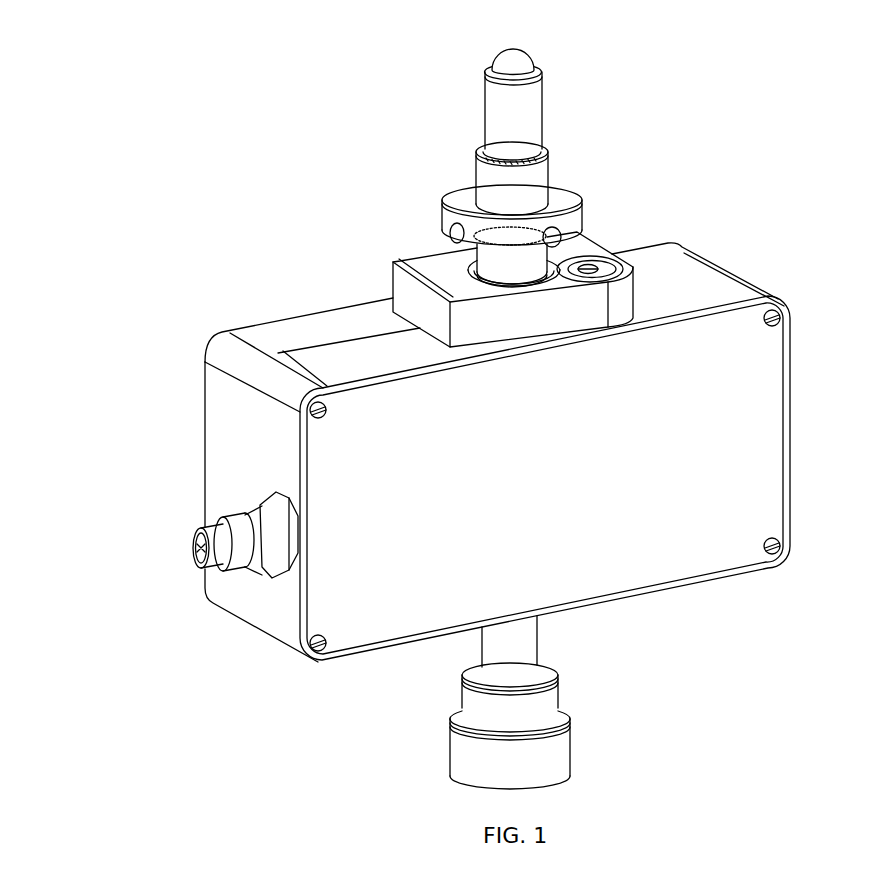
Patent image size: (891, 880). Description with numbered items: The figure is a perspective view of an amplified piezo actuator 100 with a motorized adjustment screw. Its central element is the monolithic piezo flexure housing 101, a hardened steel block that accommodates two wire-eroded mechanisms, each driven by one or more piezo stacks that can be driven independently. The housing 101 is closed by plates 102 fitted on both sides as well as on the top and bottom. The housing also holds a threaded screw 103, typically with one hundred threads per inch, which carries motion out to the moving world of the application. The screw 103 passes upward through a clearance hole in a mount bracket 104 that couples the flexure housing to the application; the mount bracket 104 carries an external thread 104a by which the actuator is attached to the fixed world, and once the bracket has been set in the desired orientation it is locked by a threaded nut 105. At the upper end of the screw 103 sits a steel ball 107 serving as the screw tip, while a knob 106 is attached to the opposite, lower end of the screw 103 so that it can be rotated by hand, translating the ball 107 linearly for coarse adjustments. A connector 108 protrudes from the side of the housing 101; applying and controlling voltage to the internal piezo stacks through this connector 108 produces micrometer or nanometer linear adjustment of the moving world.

The amplified piezo actuator 100 is at (212, 155).
The monolithic piezo flexure housing 101 is at (718, 292).
The plates 102 is at (765, 460).
The threaded screw 103 is at (543, 107).
The mount bracket 104 is at (637, 283).
The external thread 104a is at (553, 175).
The threaded nut 105 is at (590, 213).
The knob 106 is at (572, 741).
The steel ball 107 is at (533, 52).
The connector 108 is at (193, 528).